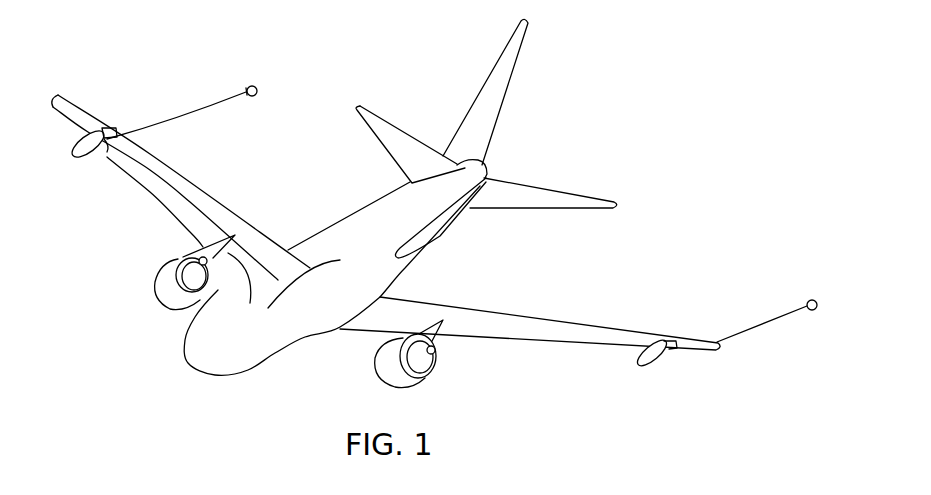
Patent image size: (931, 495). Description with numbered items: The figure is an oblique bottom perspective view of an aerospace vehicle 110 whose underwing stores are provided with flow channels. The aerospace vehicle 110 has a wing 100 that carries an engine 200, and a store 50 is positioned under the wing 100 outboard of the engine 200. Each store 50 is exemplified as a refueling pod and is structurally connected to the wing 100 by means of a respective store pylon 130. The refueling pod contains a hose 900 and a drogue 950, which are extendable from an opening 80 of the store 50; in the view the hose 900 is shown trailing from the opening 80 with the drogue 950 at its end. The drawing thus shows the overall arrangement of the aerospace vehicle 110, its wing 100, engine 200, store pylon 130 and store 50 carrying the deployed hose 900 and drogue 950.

The wing 100 is at (206, 193).
The aerospace vehicle 110 is at (334, 226).
The store pylon 130 is at (99, 130).
The store 50 is at (77, 160).
The opening 80 is at (107, 150).
The hose 900 is at (197, 113).
The drogue 950 is at (259, 89).
The engine 200 is at (157, 300).